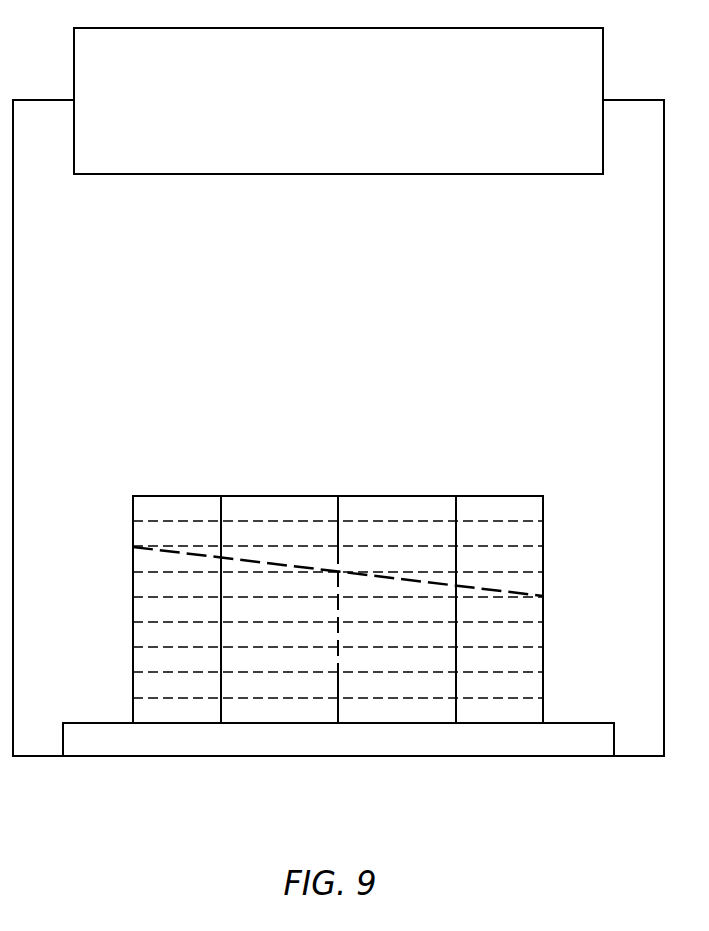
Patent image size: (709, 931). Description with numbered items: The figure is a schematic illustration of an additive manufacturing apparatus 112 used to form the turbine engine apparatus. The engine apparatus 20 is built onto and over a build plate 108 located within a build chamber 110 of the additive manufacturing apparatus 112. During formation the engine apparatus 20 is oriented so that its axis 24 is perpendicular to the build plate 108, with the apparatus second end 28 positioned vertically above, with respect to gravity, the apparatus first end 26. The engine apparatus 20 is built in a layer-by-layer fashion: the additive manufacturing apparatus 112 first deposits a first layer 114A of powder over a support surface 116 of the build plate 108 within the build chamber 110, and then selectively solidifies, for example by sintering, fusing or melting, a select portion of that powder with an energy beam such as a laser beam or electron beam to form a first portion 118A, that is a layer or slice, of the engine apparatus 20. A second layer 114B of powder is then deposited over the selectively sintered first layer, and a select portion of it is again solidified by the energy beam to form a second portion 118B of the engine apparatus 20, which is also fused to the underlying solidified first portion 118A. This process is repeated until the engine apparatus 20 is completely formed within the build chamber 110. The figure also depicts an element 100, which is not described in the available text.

The additive manufacturing apparatus 112 is at (318, 131).
The build chamber 110 is at (318, 327).
The engine apparatus 20 is at (384, 493).
The apparatus second end 28 is at (249, 496).
The apparatus first end 26 is at (243, 724).
The axis 24 is at (338, 705).
The defect 100 is at (508, 590).
The first layer 114A is at (545, 710).
The second layer 114B is at (545, 685).
The first portion 118A is at (456, 708).
The second portion 118B is at (456, 680).
The support surface 116 is at (93, 723).
The build plate 108 is at (63, 739).